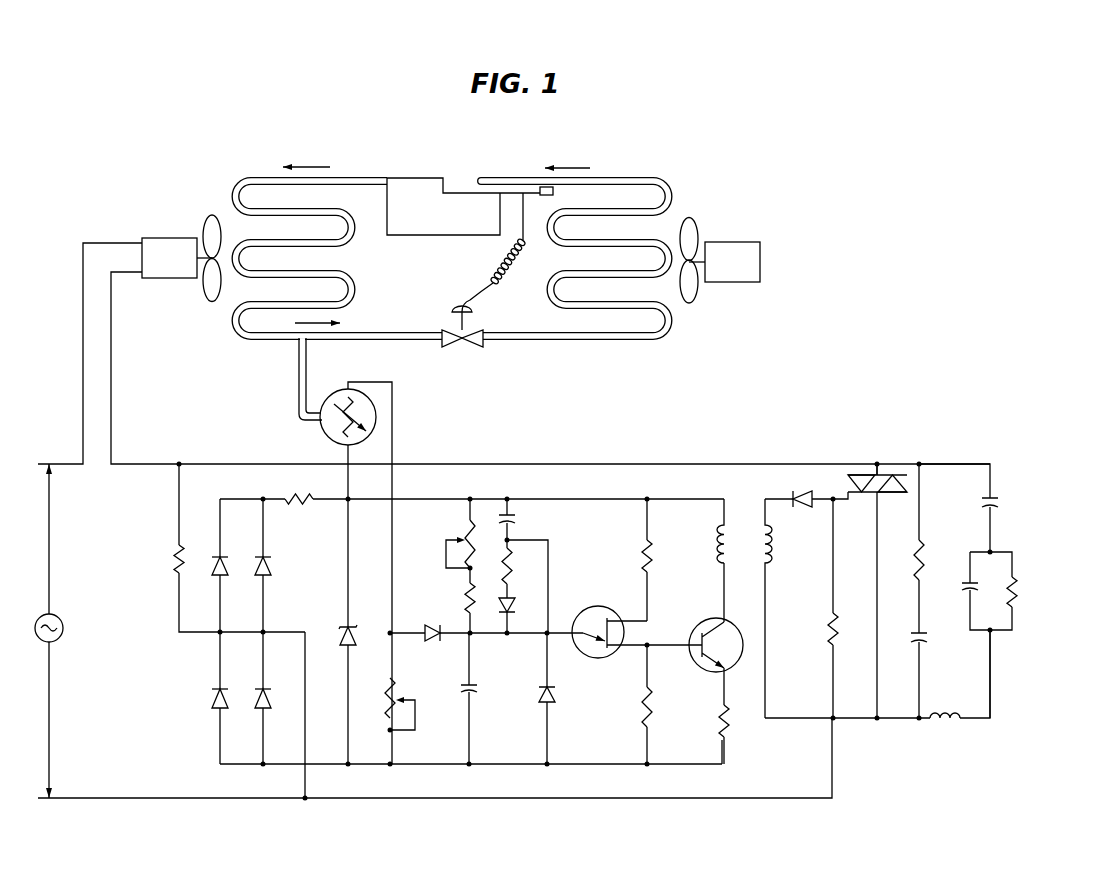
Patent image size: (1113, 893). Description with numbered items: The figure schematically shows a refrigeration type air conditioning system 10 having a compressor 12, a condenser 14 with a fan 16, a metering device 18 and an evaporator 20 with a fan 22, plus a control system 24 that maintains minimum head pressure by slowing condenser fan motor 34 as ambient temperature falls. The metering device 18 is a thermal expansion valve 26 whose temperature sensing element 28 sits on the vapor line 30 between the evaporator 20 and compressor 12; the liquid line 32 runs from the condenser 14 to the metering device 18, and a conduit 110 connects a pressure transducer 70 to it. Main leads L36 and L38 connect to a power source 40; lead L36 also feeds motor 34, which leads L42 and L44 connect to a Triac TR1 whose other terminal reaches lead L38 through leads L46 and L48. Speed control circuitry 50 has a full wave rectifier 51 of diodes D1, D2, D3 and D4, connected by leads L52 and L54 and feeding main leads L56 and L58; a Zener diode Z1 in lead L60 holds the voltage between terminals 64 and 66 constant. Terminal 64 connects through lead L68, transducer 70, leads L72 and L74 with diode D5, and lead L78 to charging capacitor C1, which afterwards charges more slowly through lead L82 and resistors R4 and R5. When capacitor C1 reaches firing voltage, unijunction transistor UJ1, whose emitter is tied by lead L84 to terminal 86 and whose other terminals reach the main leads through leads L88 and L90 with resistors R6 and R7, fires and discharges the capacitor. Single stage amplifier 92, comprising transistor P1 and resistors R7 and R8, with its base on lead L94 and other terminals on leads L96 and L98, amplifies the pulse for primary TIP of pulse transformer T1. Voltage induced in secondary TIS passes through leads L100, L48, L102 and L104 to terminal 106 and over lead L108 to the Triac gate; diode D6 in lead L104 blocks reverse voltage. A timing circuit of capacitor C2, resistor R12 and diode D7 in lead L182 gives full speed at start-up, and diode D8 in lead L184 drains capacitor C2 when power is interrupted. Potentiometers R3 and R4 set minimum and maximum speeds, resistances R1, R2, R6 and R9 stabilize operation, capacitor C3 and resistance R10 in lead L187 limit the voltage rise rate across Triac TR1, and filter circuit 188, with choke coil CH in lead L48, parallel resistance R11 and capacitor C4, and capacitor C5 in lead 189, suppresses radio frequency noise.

The refrigeration type air conditioning system 10 is at (253, 146).
The compressor 12 is at (420, 177).
The condenser 14 is at (352, 243).
The condenser fan 16 is at (208, 218).
The metering device 18 is at (478, 345).
The evaporator 20 is at (672, 333).
The evaporator fan 22 is at (695, 222).
The control system 24 is at (647, 461).
The thermal expansion valve 26 is at (450, 333).
The temperature sensing element 28 is at (553, 193).
The vapor line 30 is at (530, 178).
The liquid line 32 is at (262, 345).
The condenser fan motor 34 is at (181, 268).
The power source 40 is at (62, 617).
The motor speed control circuitry 50 is at (572, 492).
The full wave rectifier 51 is at (205, 645).
The terminal 64 is at (354, 505).
The terminal 66 is at (348, 764).
The pressure transducer 70 is at (341, 393).
The terminal 86 is at (464, 637).
The single stage amplifier 92 is at (740, 685).
The terminal 106 is at (835, 492).
The conduit 110 is at (298, 397).
The filter circuit 188 is at (1007, 583).
The lead 189 is at (992, 672).
The main lead L36 is at (83, 366).
The main lead L38 is at (233, 800).
The lead L42 is at (482, 463).
The lead L44 is at (880, 464).
The lead L46 is at (876, 590).
The lead L48 is at (897, 721).
The lead L52 is at (178, 497).
The lead L54 is at (310, 787).
The main lead L56 is at (447, 499).
The main lead L58 is at (498, 767).
The lead L60 is at (348, 560).
The lead L68 is at (342, 468).
The lead L72 is at (394, 412).
The lead L74 is at (495, 640).
The lead L78 is at (473, 672).
The lead L82 is at (472, 512).
The lead L84 is at (562, 640).
The lead L88 is at (650, 514).
The lead L90 is at (647, 746).
The lead L94 is at (667, 643).
The lead L96 is at (724, 590).
The lead L98 is at (722, 757).
The lead L100 is at (767, 672).
The lead L102 is at (834, 562).
The lead L104 is at (780, 499).
The lead L108 is at (850, 500).
The lead L182 is at (512, 527).
The lead L184 is at (549, 560).
The lead L187 is at (925, 478).
The resistance R1 is at (183, 558).
The resistance R2 is at (290, 497).
The potentiometer R3 is at (385, 700).
The potentiometer R4 is at (465, 530).
The resistor R5 is at (468, 596).
The resistor R6 is at (652, 566).
The resistor R7 is at (652, 698).
The resistor R8 is at (728, 732).
The resistance R9 is at (836, 636).
The resistance R10 is at (923, 556).
The resistance R11 is at (1018, 594).
The resistor R12 is at (509, 577).
The charging capacitor C1 is at (462, 688).
The capacitor C2 is at (517, 518).
The capacitor C3 is at (925, 640).
The capacitor C4 is at (962, 587).
The second capacitor C5 is at (1000, 503).
The diode D1 is at (228, 565).
The diode D2 is at (272, 562).
The diode D3 is at (212, 697).
The diode D4 is at (270, 703).
The diode D5 is at (432, 626).
The diode D6 is at (803, 497).
The diode D7 is at (515, 608).
The diode D8 is at (560, 695).
The Zener diode Z1 is at (343, 625).
The unijunction transistor UJ1 is at (580, 613).
The transistor P1 is at (736, 627).
The pulse transformer T1 is at (741, 606).
The pulse transformer primary TIP is at (717, 546).
The pulse transformer secondary TIS is at (772, 546).
The Triac TR1 is at (862, 474).
The choke coil CH is at (955, 722).